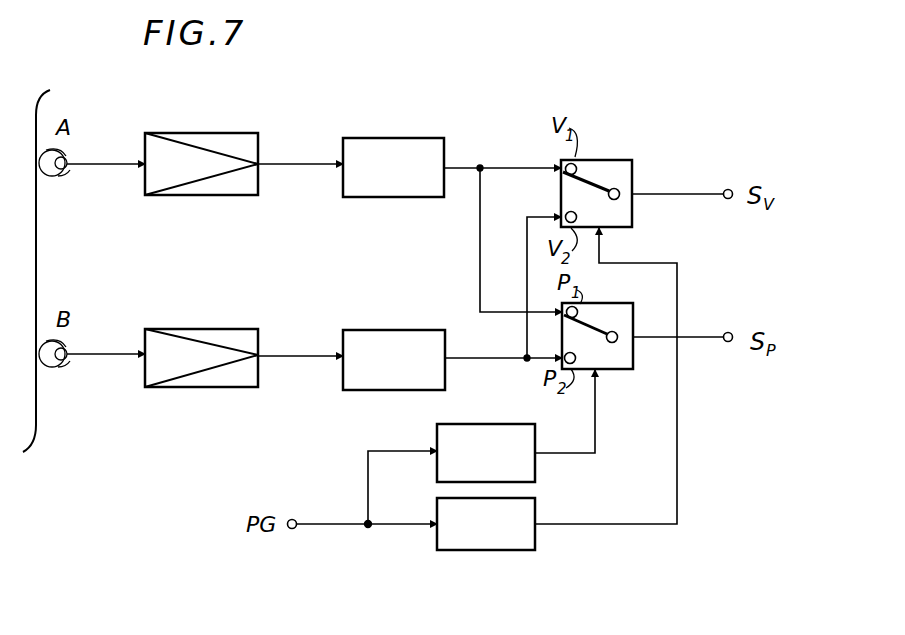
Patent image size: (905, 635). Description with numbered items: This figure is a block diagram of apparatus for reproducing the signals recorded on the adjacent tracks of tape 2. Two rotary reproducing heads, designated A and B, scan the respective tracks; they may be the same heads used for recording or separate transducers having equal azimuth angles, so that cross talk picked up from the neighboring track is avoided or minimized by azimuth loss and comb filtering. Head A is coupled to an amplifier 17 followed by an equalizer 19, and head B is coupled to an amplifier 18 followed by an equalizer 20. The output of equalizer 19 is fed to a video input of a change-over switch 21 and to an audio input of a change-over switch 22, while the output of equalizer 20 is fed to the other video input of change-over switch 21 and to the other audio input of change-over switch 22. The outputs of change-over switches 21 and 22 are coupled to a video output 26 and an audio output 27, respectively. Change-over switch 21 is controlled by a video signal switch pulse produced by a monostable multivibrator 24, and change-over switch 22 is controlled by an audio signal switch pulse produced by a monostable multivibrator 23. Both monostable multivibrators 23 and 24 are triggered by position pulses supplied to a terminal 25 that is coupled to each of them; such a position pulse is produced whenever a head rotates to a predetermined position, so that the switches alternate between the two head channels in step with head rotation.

The tape 2 is at (36, 262).
The amplifier 17 is at (250, 141).
The amplifier 18 is at (258, 331).
The equalizer 19 is at (435, 143).
The equalizer 20 is at (432, 335).
The change-over switch 21 is at (627, 158).
The change-over switch 22 is at (616, 303).
The monostable multivibrator 23 is at (495, 424).
The monostable multivibrator 24 is at (484, 545).
The terminal 25 is at (296, 519).
The video output 26 is at (729, 189).
The audio output 27 is at (731, 333).